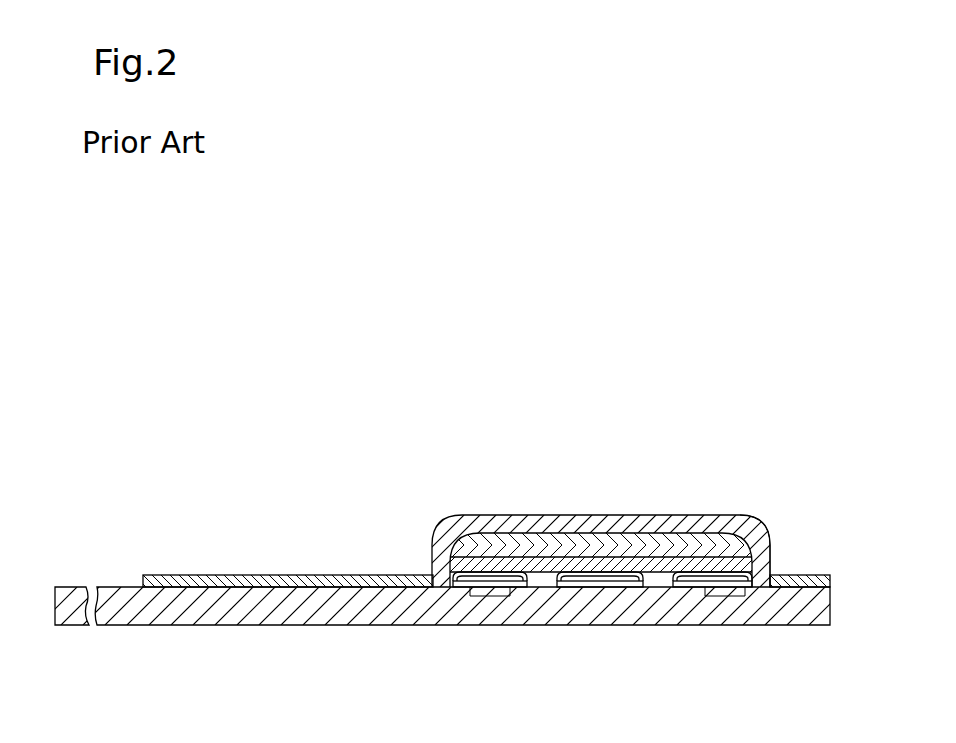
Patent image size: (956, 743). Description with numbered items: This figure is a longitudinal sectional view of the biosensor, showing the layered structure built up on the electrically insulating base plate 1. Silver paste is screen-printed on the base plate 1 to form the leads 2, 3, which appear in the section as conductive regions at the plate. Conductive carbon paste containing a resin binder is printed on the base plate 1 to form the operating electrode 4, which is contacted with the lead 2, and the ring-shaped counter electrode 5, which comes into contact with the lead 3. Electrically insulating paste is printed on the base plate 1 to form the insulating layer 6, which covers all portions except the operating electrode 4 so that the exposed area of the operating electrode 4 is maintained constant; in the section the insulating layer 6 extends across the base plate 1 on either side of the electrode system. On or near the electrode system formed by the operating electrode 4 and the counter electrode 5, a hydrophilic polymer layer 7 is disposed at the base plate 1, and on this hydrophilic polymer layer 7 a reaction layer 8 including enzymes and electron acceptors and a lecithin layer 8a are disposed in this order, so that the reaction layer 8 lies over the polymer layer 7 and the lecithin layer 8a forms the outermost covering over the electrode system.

The electrically insulating base plate 1 is at (230, 627).
The lead 2 is at (614, 590).
The lead 3 is at (487, 590).
The operating electrode 4 is at (606, 562).
The counter electrode 5 is at (492, 572).
The insulating layer 6 is at (329, 575).
The hydrophilic polymer layer 7 is at (628, 560).
The reaction layer 8 is at (544, 528).
The lecithin layer 8a is at (737, 527).